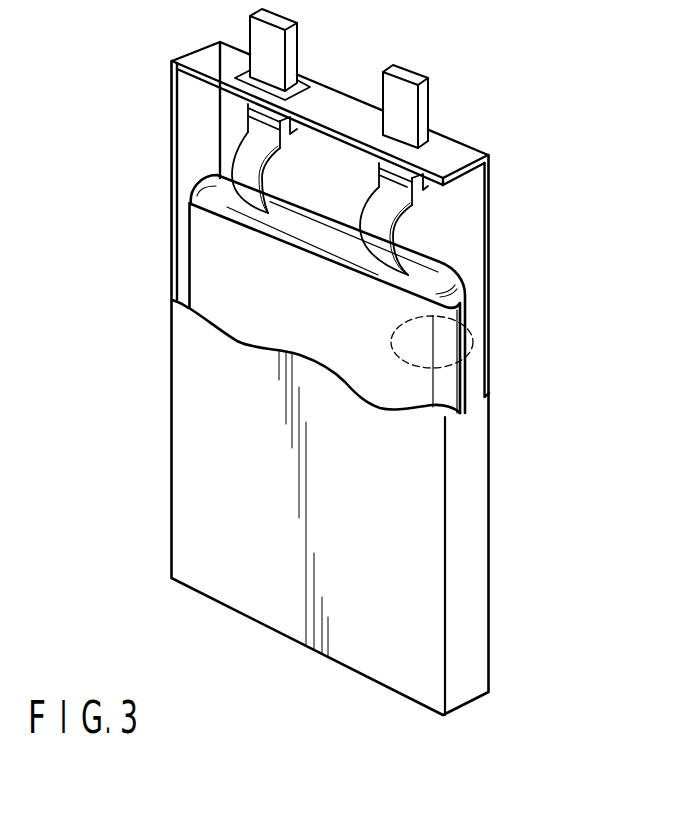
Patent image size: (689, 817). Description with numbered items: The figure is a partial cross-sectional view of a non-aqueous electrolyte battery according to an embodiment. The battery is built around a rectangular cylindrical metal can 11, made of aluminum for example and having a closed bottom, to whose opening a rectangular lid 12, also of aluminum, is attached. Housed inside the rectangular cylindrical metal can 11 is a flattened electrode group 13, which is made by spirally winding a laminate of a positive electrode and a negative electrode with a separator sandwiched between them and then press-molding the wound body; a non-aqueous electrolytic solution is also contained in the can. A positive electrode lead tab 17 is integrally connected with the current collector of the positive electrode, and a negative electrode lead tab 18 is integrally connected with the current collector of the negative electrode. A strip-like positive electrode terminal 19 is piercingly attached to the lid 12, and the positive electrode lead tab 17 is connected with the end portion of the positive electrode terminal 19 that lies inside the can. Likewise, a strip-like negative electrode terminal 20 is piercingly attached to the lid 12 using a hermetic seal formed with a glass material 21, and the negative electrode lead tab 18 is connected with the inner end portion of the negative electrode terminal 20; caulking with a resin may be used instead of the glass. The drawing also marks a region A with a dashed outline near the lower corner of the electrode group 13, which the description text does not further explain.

The rectangular cylindrical metal can 11 is at (480, 503).
The rectangular lid 12 is at (445, 145).
The flattened electrode group 13 is at (470, 305).
The positive electrode lead tab 17 is at (397, 227).
The negative electrode lead tab 18 is at (268, 173).
The positive electrode terminal 19 is at (422, 97).
The negative electrode terminal 20 is at (292, 42).
The glass material 21 is at (317, 80).
The region A is at (474, 343).